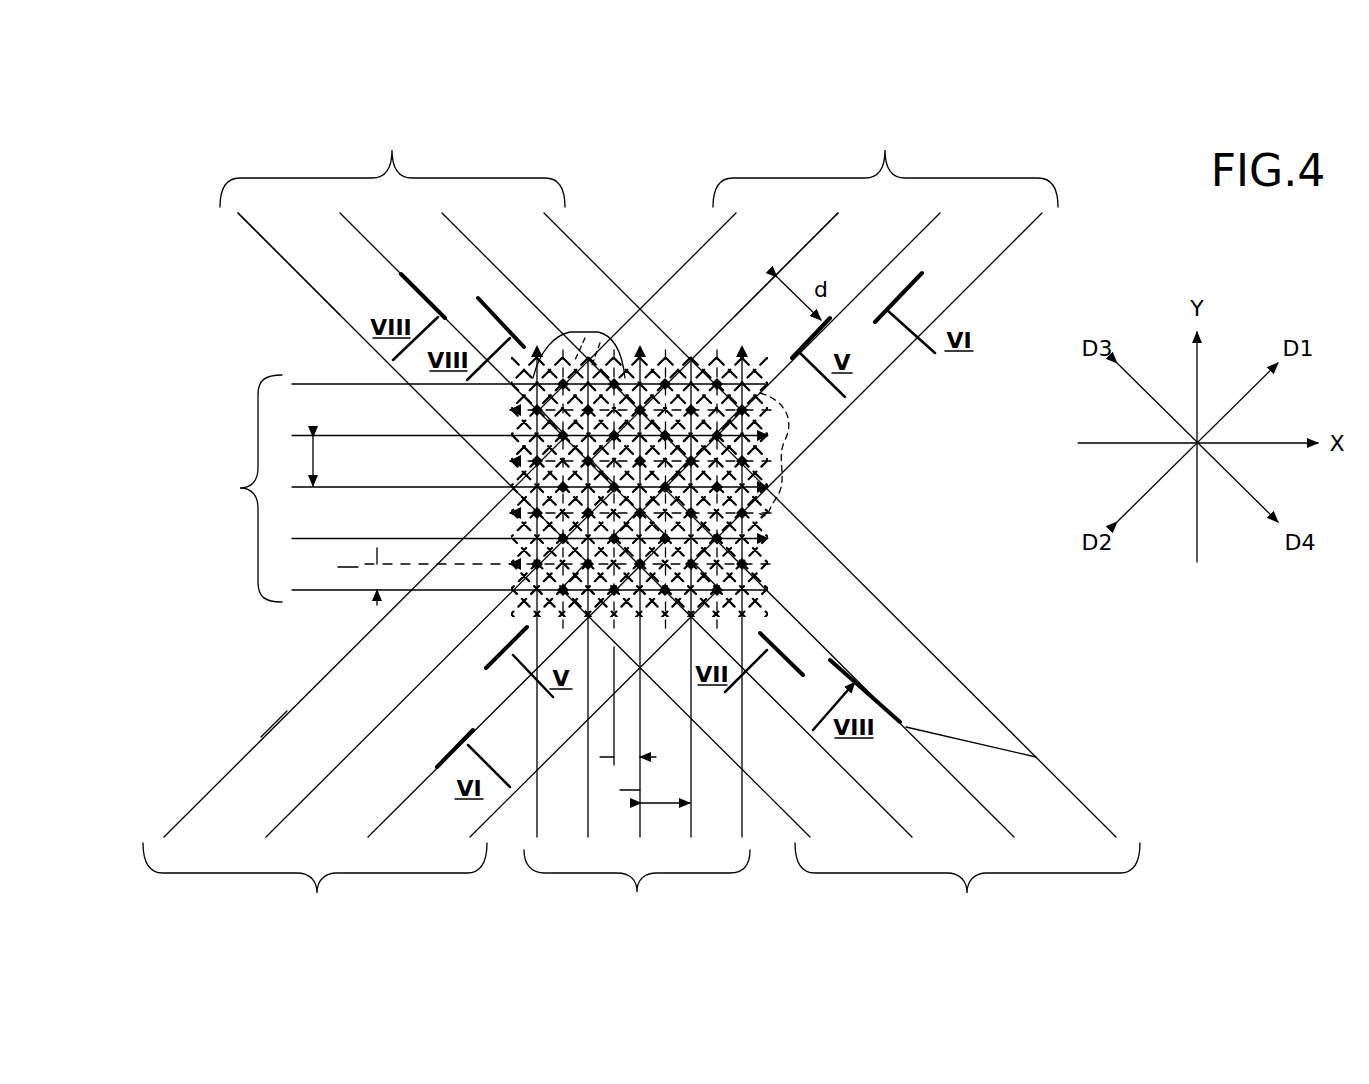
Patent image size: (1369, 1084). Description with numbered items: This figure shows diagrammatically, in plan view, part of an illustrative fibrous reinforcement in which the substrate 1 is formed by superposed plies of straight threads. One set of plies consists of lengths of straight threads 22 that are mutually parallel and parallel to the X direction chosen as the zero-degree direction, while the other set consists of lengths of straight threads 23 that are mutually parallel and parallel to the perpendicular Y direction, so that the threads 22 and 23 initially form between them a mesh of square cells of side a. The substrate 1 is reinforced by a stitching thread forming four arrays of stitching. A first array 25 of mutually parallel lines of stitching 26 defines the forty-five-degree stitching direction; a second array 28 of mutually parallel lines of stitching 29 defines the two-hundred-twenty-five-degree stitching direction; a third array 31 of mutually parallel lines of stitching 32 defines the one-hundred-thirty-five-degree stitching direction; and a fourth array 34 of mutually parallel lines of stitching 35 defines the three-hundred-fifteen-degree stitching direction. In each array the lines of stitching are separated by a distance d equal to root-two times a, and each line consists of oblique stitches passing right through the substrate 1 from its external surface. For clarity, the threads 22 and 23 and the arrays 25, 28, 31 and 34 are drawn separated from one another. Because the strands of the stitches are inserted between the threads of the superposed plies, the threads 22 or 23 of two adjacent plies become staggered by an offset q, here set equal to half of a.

The substrate 1 is at (846, 520).
The lengths of straight threads 22 is at (757, 512).
The lengths of straight threads 23 is at (573, 332).
The first array 25 is at (799, 352).
The lines of stitching 26 is at (735, 318).
The second array 28 is at (431, 690).
The lines of stitching 29 is at (337, 763).
The third array 31 is at (480, 352).
The lines of stitching 32 is at (403, 280).
The fourth array 34 is at (850, 690).
The lines of stitching 35 is at (906, 727).